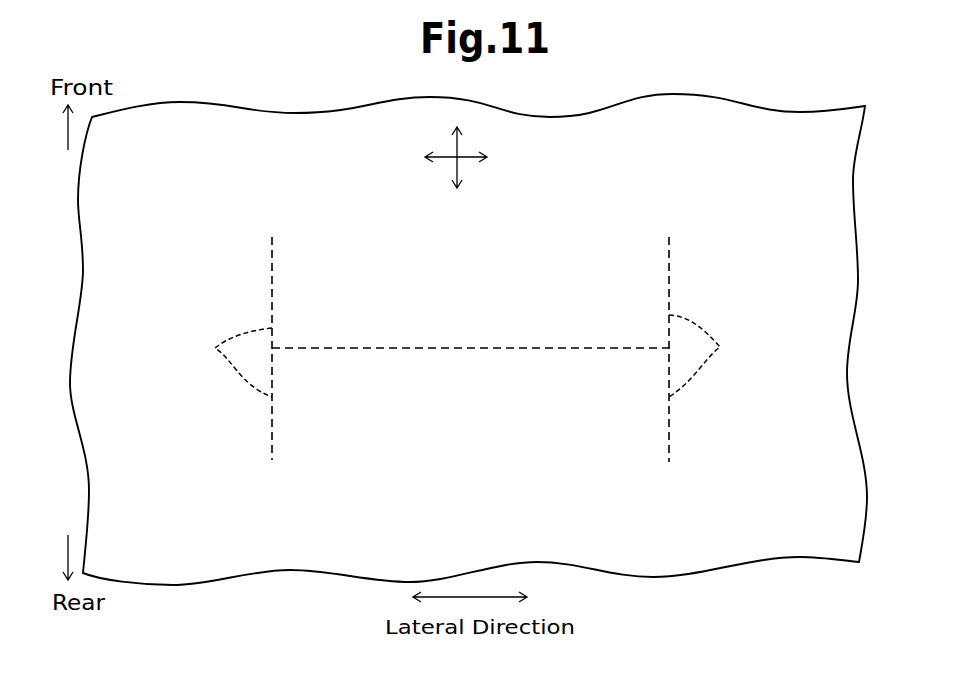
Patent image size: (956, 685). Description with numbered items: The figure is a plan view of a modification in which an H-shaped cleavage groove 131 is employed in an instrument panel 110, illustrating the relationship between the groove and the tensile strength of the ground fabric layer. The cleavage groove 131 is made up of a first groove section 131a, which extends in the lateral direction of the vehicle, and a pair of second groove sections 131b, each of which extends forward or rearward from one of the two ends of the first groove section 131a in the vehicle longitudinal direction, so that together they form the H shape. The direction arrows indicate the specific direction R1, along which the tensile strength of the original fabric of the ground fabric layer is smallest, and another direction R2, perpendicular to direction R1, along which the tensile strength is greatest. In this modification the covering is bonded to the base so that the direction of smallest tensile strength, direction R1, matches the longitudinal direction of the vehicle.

The instrument panel 110 is at (320, 555).
The cleavage groove 131 is at (467, 335).
The first groove section 131a is at (458, 350).
The second groove sections 131b is at (467, 356).
The specific direction R1 is at (456, 172).
The another direction R2 is at (475, 161).